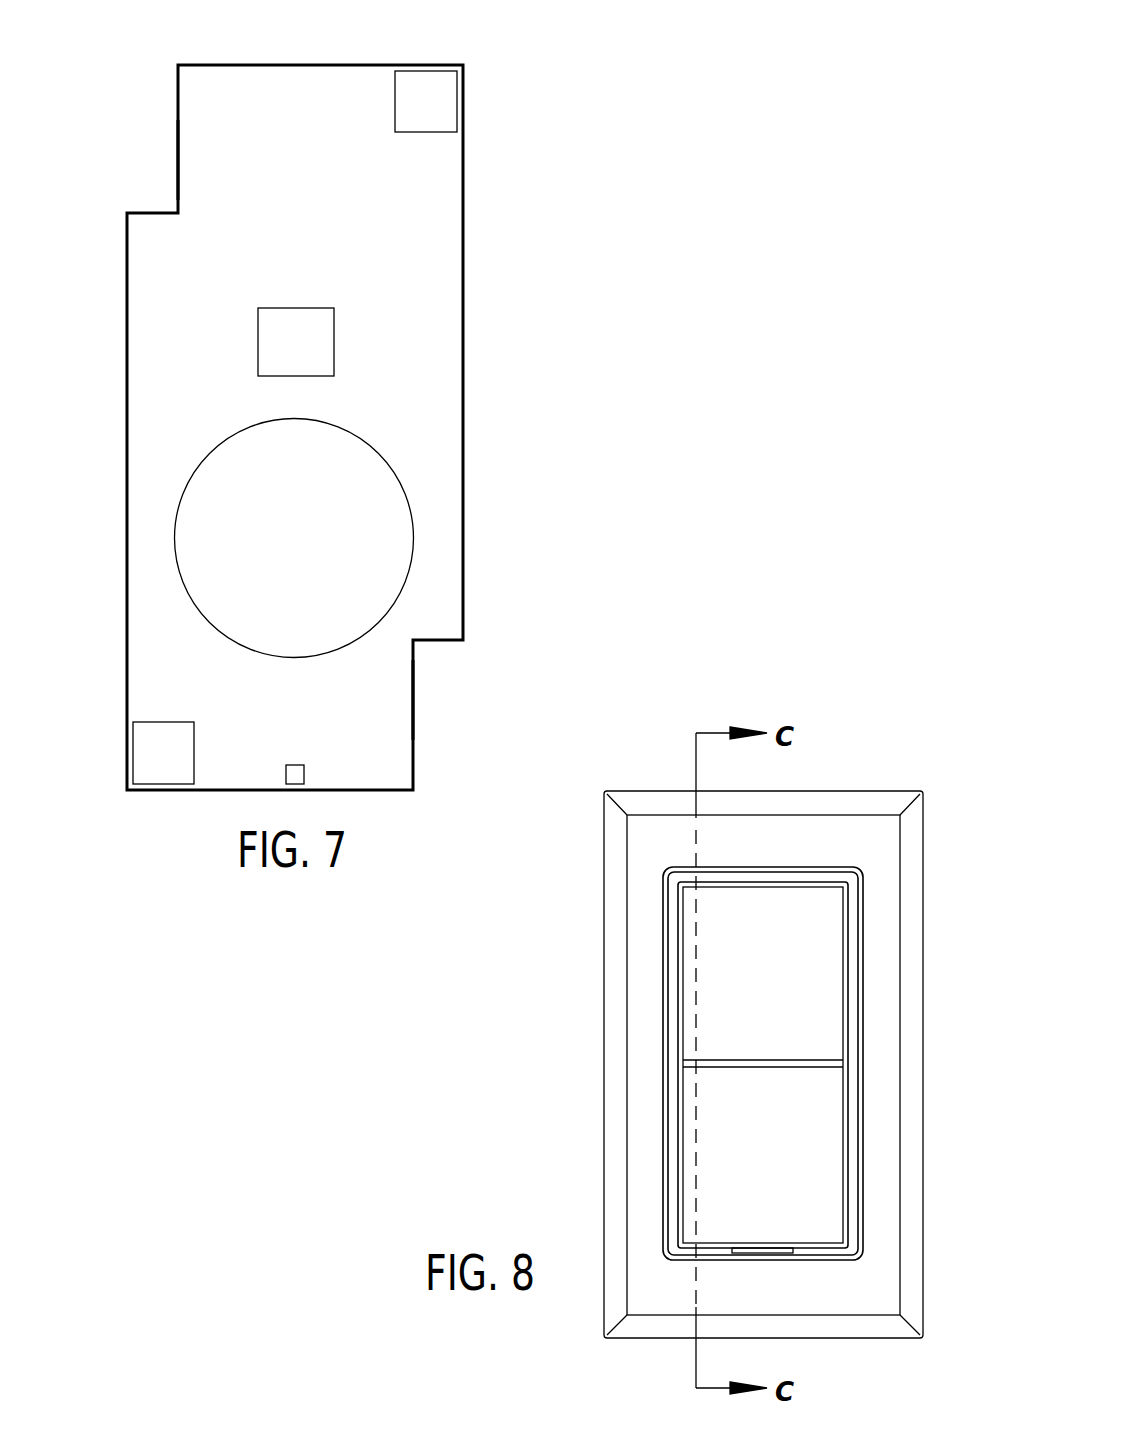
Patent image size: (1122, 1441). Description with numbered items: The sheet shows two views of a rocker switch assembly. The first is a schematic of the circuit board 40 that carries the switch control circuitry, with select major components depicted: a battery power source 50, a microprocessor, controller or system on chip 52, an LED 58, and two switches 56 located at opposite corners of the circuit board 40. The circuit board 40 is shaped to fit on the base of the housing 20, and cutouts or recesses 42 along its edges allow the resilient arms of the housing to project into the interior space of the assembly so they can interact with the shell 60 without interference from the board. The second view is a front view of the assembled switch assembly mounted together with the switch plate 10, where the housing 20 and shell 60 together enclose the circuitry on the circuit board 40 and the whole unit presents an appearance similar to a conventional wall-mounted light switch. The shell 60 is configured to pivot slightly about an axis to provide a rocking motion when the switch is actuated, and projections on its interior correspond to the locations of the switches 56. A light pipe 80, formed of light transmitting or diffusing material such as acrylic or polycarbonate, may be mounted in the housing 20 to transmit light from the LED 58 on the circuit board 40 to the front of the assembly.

In FIG. 8, the switch plate 10 is at (830, 810).
In FIG. 8, the housing 20 is at (672, 967).
In FIG. 7, the circuit board 40 is at (268, 264).
In FIG. 7, the cutouts or recesses 42 is at (177, 160).
In FIG. 7, the battery power source 50 is at (294, 538).
In FIG. 7, the system on chip 52 is at (334, 322).
In FIG. 7, the switches 56 is at (438, 93).
In FIG. 7, the LED 58 is at (304, 773).
In FIG. 8, the shell 60 is at (735, 1030).
In FIG. 8, the light pipe 80 is at (775, 1248).